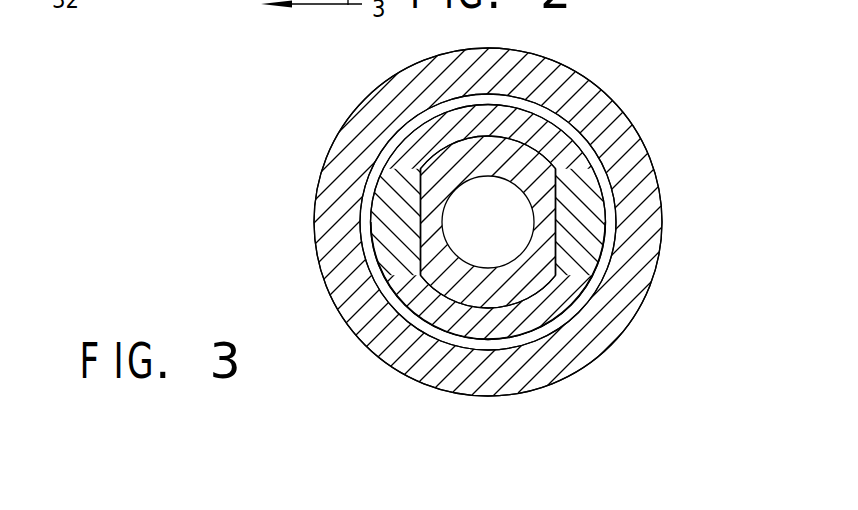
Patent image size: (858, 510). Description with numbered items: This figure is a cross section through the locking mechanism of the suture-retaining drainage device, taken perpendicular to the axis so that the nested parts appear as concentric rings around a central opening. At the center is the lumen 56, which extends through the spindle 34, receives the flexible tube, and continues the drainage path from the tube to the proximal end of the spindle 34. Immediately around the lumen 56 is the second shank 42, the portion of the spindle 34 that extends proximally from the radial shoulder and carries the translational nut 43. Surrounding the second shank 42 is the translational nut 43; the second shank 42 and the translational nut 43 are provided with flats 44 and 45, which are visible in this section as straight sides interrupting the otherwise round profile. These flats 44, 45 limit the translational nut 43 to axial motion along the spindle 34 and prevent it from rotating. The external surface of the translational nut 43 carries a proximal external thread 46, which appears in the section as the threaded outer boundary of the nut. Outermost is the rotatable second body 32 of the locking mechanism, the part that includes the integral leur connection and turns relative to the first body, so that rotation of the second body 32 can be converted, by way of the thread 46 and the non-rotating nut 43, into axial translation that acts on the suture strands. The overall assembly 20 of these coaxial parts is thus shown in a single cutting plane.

The assembly 20 is at (302, 110).
The rotatable second body 32 is at (590, 85).
The spindle 34 is at (402, 320).
The second shank 42 is at (540, 168).
The translational nut 43 is at (553, 302).
The flat 44 is at (420, 185).
The flat 45 is at (557, 212).
The proximal external thread 46 is at (595, 108).
The lumen 56 is at (478, 231).